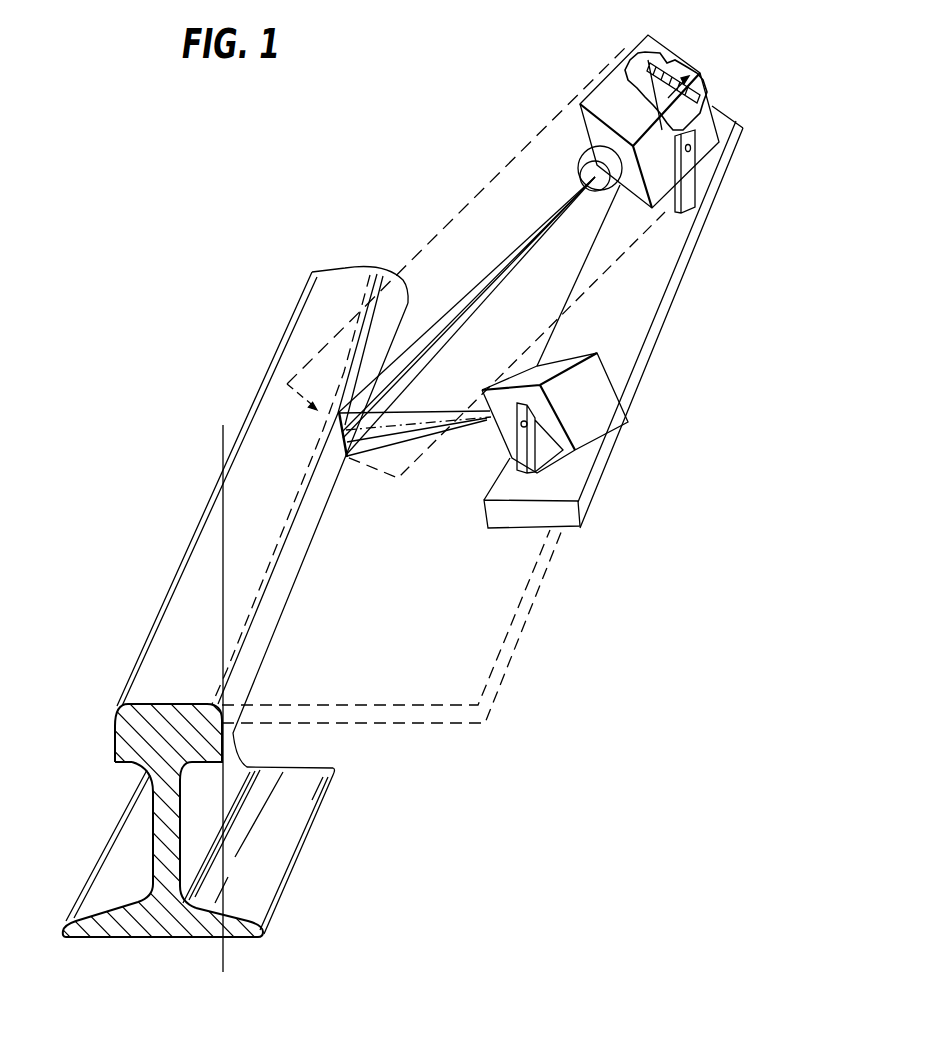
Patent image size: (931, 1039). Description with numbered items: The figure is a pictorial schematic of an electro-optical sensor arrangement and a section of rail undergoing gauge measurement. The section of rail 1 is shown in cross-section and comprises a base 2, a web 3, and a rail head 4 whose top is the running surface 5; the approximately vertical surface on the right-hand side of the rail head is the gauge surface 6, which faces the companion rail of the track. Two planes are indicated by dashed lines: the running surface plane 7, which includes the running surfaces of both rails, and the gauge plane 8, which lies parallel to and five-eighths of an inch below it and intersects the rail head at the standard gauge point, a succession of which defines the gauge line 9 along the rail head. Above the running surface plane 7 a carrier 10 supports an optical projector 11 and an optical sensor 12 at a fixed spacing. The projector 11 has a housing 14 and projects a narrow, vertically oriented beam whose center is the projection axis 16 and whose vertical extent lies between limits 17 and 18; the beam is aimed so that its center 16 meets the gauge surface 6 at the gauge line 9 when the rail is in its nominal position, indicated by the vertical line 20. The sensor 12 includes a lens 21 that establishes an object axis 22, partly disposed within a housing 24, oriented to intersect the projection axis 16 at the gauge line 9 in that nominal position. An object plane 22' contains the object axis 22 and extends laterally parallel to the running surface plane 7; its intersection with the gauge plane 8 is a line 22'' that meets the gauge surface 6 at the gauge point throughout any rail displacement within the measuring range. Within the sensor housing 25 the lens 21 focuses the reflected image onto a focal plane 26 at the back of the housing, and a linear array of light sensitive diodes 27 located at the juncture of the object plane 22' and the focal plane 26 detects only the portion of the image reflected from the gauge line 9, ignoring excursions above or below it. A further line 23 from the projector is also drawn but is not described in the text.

The section of rail 1 is at (182, 548).
The base 2 is at (80, 890).
The web 3 is at (152, 824).
The rail head 4 is at (131, 762).
The running surface 5 is at (168, 637).
The gauge surface 6 is at (223, 770).
The running surface plane 7 is at (493, 672).
The gauge plane 8 is at (453, 727).
The gauge line 9 is at (297, 547).
The carrier 10 is at (700, 203).
The optical projector 11 is at (576, 344).
The optical sensor 12 is at (612, 50).
The housing 14 is at (610, 371).
The projection axis 16 is at (393, 427).
The beam limit 17 is at (439, 412).
The beam limit 18 is at (430, 440).
The nominal position line 20 is at (223, 425).
The lens 21 is at (582, 160).
The object axis 22 is at (468, 307).
The object plane 22' is at (458, 226).
The intersection line 22'' is at (502, 362).
The beam boundary ray 23 is at (472, 285).
The housing 24 is at (492, 295).
The housing 25 is at (712, 140).
The focal plane 26 is at (657, 58).
The linear array of light sensitive diodes 27 is at (642, 62).